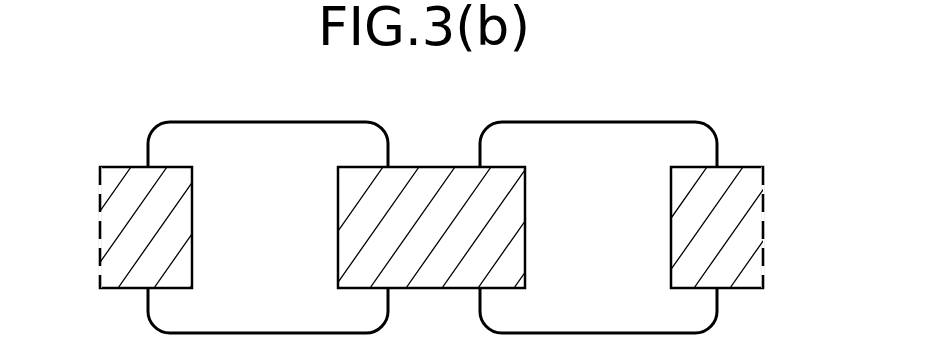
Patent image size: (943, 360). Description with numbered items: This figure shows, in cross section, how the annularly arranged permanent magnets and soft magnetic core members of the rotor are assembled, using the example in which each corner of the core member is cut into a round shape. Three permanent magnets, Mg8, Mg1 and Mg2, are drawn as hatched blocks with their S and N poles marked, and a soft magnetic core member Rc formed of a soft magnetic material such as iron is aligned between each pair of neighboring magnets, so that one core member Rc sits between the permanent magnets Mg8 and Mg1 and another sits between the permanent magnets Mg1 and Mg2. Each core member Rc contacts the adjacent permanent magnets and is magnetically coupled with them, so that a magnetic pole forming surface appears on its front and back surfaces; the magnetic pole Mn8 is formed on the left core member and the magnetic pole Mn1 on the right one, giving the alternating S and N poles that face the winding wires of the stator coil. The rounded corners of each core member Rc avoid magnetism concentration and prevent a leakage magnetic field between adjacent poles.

The permanent magnet Mg8 is at (115, 173).
The permanent magnet Mg1 is at (437, 183).
The permanent magnet Mg2 is at (748, 173).
The soft magnetic core member Rc is at (430, 177).
The magnetic pole Mn8 is at (242, 132).
The magnetic pole Mn1 is at (621, 130).